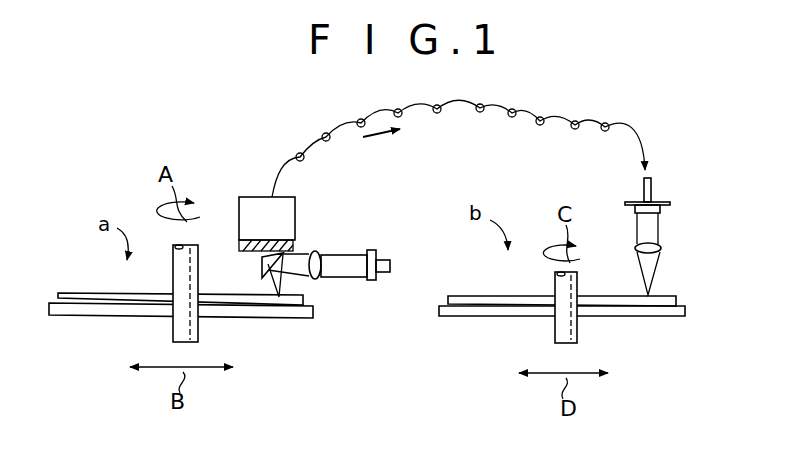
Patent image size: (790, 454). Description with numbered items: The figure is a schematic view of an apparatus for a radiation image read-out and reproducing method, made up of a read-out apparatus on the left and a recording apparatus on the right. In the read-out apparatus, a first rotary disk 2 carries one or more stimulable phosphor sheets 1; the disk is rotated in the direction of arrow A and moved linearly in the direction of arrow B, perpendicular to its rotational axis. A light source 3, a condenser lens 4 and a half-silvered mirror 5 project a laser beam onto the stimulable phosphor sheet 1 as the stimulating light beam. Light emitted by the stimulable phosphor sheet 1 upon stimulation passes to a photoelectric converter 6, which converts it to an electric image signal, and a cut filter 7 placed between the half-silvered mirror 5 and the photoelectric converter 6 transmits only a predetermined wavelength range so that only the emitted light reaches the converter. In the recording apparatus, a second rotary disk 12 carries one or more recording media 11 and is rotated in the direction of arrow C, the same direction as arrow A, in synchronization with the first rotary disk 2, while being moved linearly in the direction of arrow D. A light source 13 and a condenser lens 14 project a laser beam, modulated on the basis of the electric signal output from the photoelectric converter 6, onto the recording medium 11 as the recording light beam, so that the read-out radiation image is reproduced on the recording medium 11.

The stimulable phosphor sheet 1 is at (79, 296).
The first rotary disk 2 is at (79, 316).
The light source 3 is at (371, 283).
The condenser lens 4 is at (322, 251).
The half-silvered mirror 5 is at (260, 268).
The photoelectric converter 6 is at (286, 211).
The cut filter 7 is at (239, 246).
The recording medium 11 is at (478, 296).
The second rotary disk 12 is at (462, 318).
The light source 13 is at (666, 205).
The condenser lens 14 is at (664, 249).